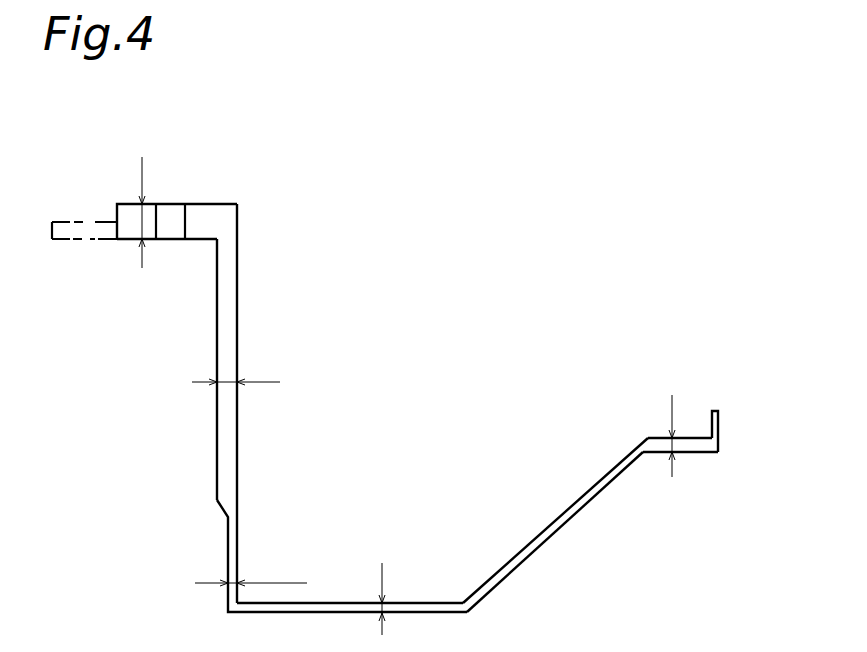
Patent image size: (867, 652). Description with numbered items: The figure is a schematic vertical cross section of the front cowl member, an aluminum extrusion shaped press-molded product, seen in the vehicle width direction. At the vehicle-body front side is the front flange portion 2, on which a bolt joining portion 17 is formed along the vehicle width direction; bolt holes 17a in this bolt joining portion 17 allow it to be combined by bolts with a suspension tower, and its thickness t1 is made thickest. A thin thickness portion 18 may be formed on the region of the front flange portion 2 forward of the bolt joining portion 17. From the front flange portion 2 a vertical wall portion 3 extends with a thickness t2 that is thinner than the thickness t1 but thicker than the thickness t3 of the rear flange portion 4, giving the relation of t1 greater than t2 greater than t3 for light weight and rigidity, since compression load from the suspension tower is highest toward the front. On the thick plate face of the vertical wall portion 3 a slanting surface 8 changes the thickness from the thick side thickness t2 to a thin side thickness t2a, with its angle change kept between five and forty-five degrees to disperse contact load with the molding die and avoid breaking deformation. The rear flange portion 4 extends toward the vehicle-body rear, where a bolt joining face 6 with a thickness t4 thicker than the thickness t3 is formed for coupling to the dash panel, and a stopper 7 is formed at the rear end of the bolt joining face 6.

The front flange portion 2 is at (200, 132).
The thin thickness portion 18 is at (92, 222).
The bolt joining portion 17 is at (197, 204).
The bolt holes 17a is at (183, 220).
The vertical wall portion 3 is at (238, 288).
The slanting surface 8 is at (223, 510).
The rear flange portion 4 is at (493, 556).
The bolt joining face 6 is at (704, 453).
The stopper 7 is at (719, 421).
The thickness of bolt joining portion t1 is at (128, 212).
The thickness of vertical wall portion t2 is at (237, 370).
The thin side thickness t2a is at (251, 572).
The thickness of rear flange portion t3 is at (368, 595).
The thickness of bolt joining face t4 is at (658, 433).